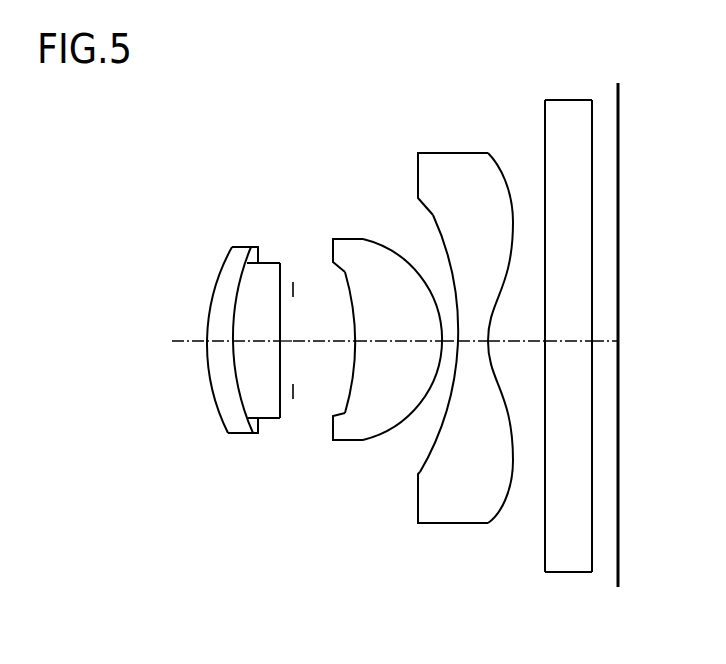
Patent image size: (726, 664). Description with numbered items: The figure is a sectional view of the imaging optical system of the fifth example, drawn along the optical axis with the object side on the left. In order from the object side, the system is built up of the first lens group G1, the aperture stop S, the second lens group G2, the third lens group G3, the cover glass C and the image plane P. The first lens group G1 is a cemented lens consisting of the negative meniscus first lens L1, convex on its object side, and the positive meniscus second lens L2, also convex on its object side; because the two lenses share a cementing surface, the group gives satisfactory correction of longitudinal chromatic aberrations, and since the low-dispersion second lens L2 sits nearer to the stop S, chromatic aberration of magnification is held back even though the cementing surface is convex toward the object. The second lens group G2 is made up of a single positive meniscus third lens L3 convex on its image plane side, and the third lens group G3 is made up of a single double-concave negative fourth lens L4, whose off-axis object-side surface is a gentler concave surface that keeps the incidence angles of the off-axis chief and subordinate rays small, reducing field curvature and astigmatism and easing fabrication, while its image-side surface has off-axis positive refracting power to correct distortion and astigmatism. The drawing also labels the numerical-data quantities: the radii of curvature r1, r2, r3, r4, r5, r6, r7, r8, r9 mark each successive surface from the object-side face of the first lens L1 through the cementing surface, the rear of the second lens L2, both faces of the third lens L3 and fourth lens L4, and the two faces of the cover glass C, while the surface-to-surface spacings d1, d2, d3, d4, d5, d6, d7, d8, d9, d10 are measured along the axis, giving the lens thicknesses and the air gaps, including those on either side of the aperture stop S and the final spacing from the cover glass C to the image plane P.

The first lens group G1 is at (202, 88).
The second lens group G2 is at (327, 88).
The third lens group G3 is at (417, 88).
The first lens L1 is at (235, 258).
The second lens L2 is at (265, 285).
The third lens L3 is at (362, 260).
The fourth lens L4 is at (462, 175).
The aperture stop S is at (295, 288).
The cover glass C is at (568, 127).
The image plane P is at (619, 200).
The radius of curvature r1 is at (216, 277).
The radius of curvature r2 is at (247, 258).
The radius of curvature r3 is at (284, 278).
The radius of curvature r4 is at (345, 268).
The radius of curvature r5 is at (395, 250).
The radius of curvature r6 is at (436, 213).
The radius of curvature r7 is at (515, 183).
The radius of curvature r8 is at (543, 137).
The radius of curvature r9 is at (592, 130).
The lens surface-to-lens surface spacing d1 is at (202, 355).
The lens surface-to-lens surface spacing d2 is at (256, 355).
The lens surface-to-lens surface spacing d3 is at (287, 345).
The lens surface-to-lens surface spacing d4 is at (324, 355).
The lens surface-to-lens surface spacing d5 is at (398, 355).
The lens surface-to-lens surface spacing d6 is at (449, 342).
The lens surface-to-lens surface spacing d7 is at (473, 355).
The lens surface-to-lens surface spacing d8 is at (516, 355).
The lens surface-to-lens surface spacing d9 is at (568, 355).
The lens surface-to-lens surface spacing d10 is at (605, 344).